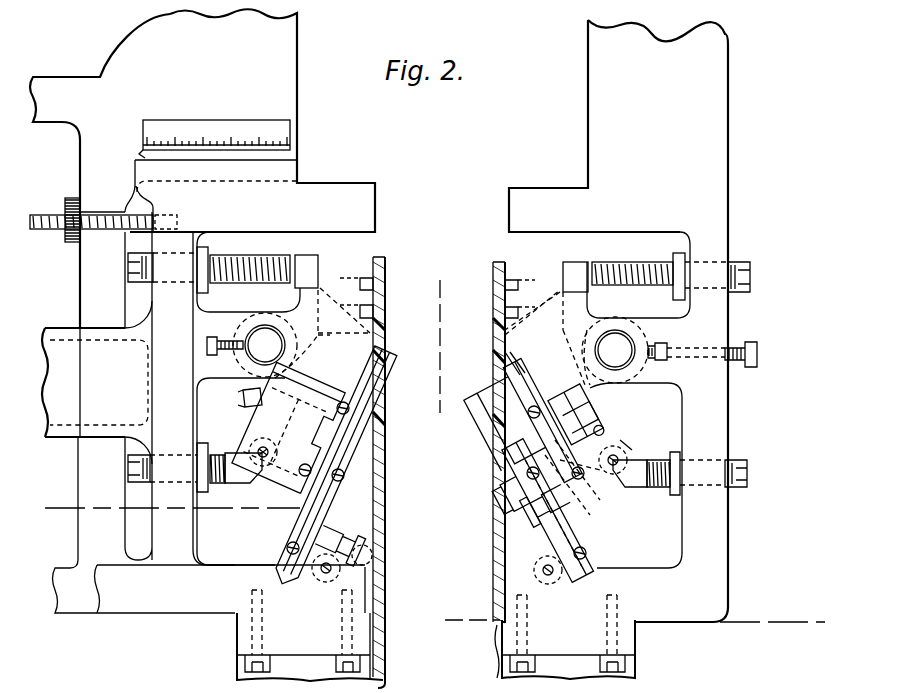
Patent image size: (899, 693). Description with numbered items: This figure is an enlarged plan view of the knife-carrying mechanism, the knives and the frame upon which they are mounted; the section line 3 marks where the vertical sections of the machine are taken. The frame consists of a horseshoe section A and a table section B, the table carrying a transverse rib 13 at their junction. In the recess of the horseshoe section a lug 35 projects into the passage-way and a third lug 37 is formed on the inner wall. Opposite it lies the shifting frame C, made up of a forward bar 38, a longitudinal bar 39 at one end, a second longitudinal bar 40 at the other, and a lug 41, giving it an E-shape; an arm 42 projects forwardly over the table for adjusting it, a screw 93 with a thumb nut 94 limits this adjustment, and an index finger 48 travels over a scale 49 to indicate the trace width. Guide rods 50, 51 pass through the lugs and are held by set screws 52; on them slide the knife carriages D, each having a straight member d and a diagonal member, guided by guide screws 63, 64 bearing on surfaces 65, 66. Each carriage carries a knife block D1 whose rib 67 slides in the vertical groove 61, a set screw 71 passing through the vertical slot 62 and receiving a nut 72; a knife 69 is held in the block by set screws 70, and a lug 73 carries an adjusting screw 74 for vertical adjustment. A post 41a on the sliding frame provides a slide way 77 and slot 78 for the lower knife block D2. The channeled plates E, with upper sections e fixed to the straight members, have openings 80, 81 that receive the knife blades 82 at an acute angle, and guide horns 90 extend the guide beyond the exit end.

The horseshoe section A is at (379, 315).
The table section B is at (88, 305).
The shifting or adjustable frame C is at (245, 388).
The knife carriage D is at (432, 337).
The knife block D1 is at (389, 427).
The lower knife block D2 is at (575, 537).
The channeled plate E is at (383, 585).
The straight member d is at (372, 275).
The upper section e is at (385, 260).
The section line 3— 3 is at (427, 292).
The transverse rib 13 is at (116, 256).
The lug 35 is at (544, 213).
The third lug 37 is at (665, 338).
The forward bar 38 is at (197, 452).
The longitudinal bar 39 is at (305, 211).
The second longitudinal bar 40 is at (302, 621).
The lug 41 is at (221, 334).
The lug or post 41a is at (372, 553).
The arm 42 is at (97, 396).
The index finger 48 is at (141, 152).
The scale 49 is at (216, 125).
The guide rod 50 is at (615, 350).
The guide rod 51 is at (265, 345).
The set screw 52 is at (764, 350).
The vertical groove 61 is at (572, 467).
The vertical slot 62 is at (584, 417).
The guide screw 63 is at (252, 253).
The guide screw 64 is at (208, 476).
The bearing surface 65 is at (441, 320).
The bearing surface 66 is at (640, 488).
The rib 67 is at (580, 463).
The knife 69 is at (362, 365).
The set screw 70 is at (292, 692).
The set screw 71 is at (632, 400).
The nut 72 is at (635, 437).
The lug 73 is at (638, 458).
The adjusting screw 74 is at (258, 448).
The slide way 77 is at (510, 497).
The slot 78 is at (352, 530).
The opening 80 is at (383, 355).
The opening 81 is at (380, 420).
The blade 82 is at (518, 363).
The guide horn 90 is at (436, 638).
The screw 93 is at (108, 215).
The thumb nut 94 is at (72, 200).